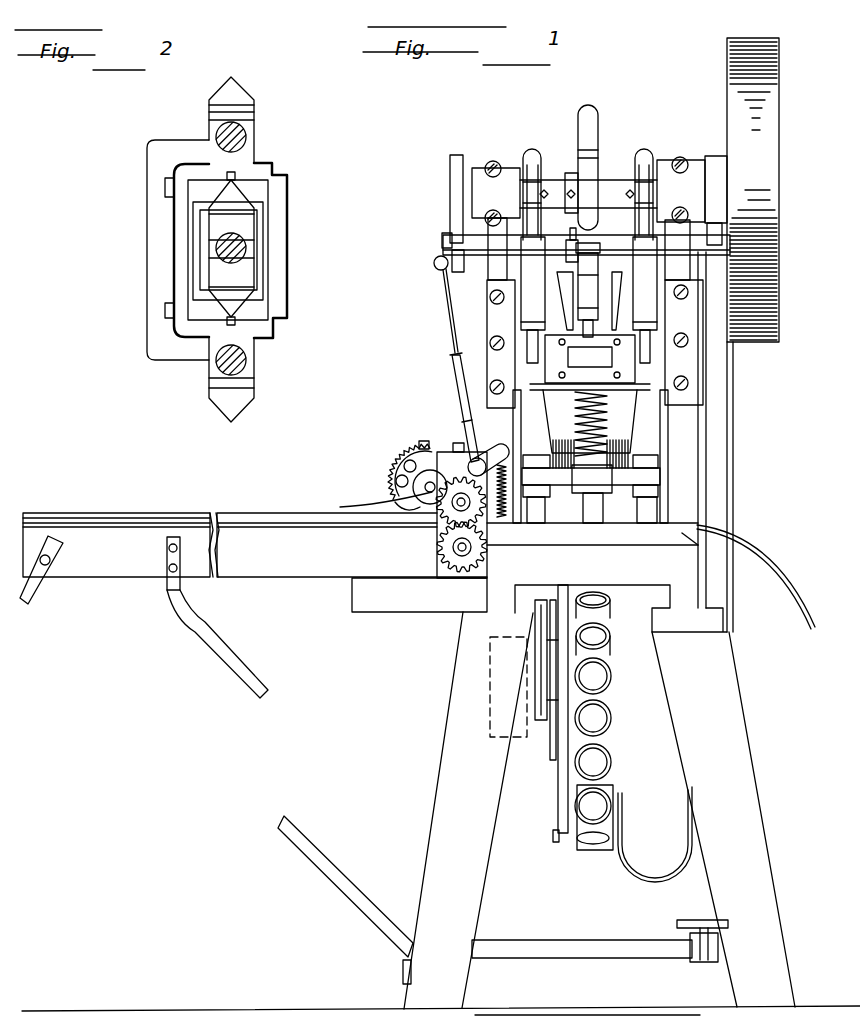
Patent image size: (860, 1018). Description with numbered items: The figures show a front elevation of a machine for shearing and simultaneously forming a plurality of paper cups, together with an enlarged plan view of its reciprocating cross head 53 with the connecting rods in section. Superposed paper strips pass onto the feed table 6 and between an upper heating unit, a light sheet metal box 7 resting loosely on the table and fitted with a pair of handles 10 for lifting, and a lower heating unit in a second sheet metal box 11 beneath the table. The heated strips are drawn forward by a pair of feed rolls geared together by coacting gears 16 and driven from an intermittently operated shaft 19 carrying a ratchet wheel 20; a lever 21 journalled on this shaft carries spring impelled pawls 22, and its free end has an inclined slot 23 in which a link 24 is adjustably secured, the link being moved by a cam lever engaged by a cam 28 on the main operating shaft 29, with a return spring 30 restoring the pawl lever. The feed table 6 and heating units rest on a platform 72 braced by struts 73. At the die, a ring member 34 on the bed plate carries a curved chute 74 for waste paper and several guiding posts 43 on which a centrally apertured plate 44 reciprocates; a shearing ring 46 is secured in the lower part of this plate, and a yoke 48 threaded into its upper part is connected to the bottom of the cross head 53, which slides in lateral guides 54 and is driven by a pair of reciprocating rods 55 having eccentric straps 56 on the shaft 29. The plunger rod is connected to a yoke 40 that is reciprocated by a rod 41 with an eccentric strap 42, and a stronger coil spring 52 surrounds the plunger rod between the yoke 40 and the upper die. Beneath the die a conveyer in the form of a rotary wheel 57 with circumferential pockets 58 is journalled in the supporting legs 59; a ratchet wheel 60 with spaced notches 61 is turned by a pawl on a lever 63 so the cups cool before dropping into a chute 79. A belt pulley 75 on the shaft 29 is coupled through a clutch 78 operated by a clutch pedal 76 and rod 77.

In FIG. 1, the feed table 6 is at (275, 537).
In FIG. 1, the sheet metal box 7 is at (247, 518).
In FIG. 1, the handles 10 is at (462, 565).
In FIG. 1, the second sheet metal box 11 is at (258, 555).
In FIG. 1, the coacting gears 16 is at (450, 512).
In FIG. 1, the intermittently operated shaft 19 is at (428, 492).
In FIG. 1, the ratchet wheel 20 is at (376, 503).
In FIG. 1, the lever 21 is at (423, 443).
In FIG. 1, the pawls 22 is at (413, 456).
In FIG. 1, the inclined slot 23 is at (490, 456).
In FIG. 1, the link 24 is at (463, 437).
In FIG. 1, the cam 28 is at (457, 200).
In FIG. 1, the main operating shaft 29 is at (607, 185).
In FIG. 1, the return spring 30 is at (500, 520).
In FIG. 1, the ring member 34 is at (682, 533).
In FIG. 2, the yoke 40 is at (243, 268).
In FIG. 1, the yoke 40 is at (570, 330).
In FIG. 2, the reciprocating rod 41 is at (247, 243).
In FIG. 1, the reciprocating rod 41 is at (586, 272).
In FIG. 1, the eccentric strap 42 is at (586, 112).
In FIG. 1, the guiding posts 43 is at (640, 513).
In FIG. 1, the centrally apertured plate 44 is at (650, 475).
In FIG. 1, the shearing ring 46 is at (618, 505).
In FIG. 1, the yoke 48 is at (630, 452).
In FIG. 1, the coil spring 52 is at (610, 420).
In FIG. 2, the reciprocating cross head 53 is at (176, 342).
In FIG. 1, the reciprocating cross head 53 is at (650, 372).
In FIG. 1, the lateral guides 54 is at (500, 320).
In FIG. 2, the reciprocating rods 55 is at (247, 137).
In FIG. 1, the reciprocating rods 55 is at (525, 275).
In FIG. 1, the eccentric straps 56 is at (530, 172).
In FIG. 1, the rotary wheel 57 is at (567, 765).
In FIG. 1, the pockets 58 is at (602, 682).
In FIG. 1, the supporting legs 59 is at (448, 818).
In FIG. 1, the ratchet wheel 60 is at (555, 840).
In FIG. 1, the notches 61 is at (553, 720).
In FIG. 1, the lever 63 is at (542, 655).
In FIG. 1, the platform 72 is at (385, 598).
In FIG. 1, the struts 73 is at (258, 695).
In FIG. 1, the curved chute 74 is at (742, 542).
In FIG. 1, the belt pulley 75 is at (746, 55).
In FIG. 1, the clutch pedal 76 is at (690, 923).
In FIG. 1, the rod 77 is at (727, 478).
In FIG. 1, the clutch 78 is at (713, 165).
In FIG. 1, the chute 79 is at (646, 862).